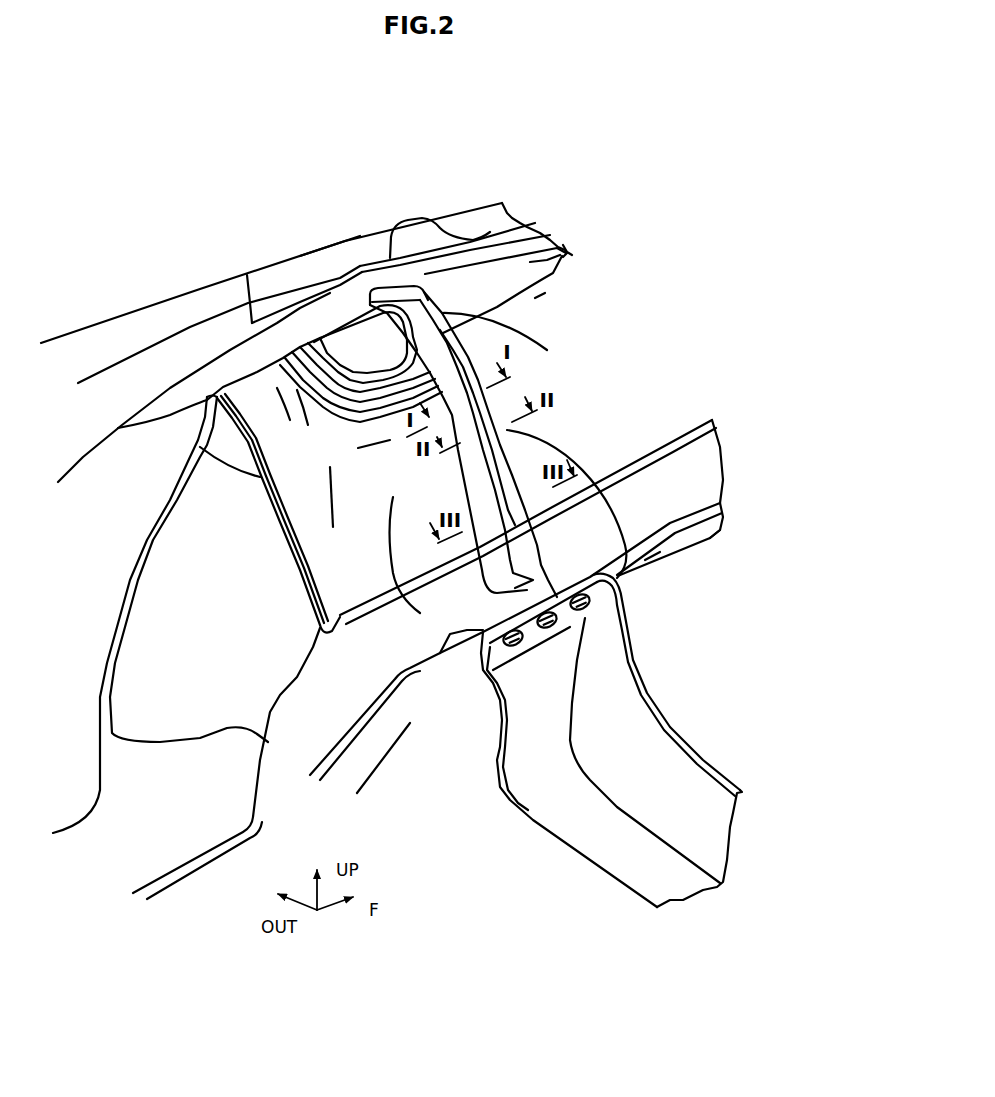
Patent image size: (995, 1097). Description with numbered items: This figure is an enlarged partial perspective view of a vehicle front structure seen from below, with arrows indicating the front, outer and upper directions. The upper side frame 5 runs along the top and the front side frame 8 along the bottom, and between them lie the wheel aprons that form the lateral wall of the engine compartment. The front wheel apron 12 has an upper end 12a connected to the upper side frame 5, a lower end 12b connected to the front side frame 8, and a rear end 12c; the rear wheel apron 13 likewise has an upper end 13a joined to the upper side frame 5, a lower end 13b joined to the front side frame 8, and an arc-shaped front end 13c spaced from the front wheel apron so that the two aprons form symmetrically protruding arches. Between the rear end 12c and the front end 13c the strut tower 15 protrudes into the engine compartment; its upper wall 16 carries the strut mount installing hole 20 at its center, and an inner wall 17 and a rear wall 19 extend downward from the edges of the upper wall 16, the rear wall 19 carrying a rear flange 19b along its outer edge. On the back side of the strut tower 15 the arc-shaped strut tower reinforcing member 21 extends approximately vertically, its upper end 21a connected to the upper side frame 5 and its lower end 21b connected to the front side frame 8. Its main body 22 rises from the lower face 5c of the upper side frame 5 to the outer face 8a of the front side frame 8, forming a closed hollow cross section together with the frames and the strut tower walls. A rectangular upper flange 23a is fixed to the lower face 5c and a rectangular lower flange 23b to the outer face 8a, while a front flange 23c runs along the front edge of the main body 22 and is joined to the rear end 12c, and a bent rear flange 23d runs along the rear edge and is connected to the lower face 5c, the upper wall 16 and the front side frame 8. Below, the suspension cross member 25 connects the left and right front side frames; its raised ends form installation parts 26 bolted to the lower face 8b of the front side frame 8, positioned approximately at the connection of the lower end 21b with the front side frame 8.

The upper side frame 5 is at (327, 243).
The lower face of the upper side frame 5c is at (437, 277).
The front side frame 8 is at (672, 525).
The outer face of the front side frame 8a is at (713, 537).
The lower face of the front side frame 8b is at (652, 562).
The front wheel apron 12 is at (540, 305).
The upper end of the front wheel apron 12a is at (570, 254).
The lower end of the front wheel apron 12b is at (688, 428).
The rear end of the front wheel apron 12c is at (640, 627).
The rear wheel apron 13 is at (113, 533).
The upper end of the rear wheel apron 13a is at (118, 427).
The lower end of the rear wheel apron 13b is at (275, 716).
The front end of the rear wheel apron 13c is at (203, 457).
The strut tower 15 is at (272, 320).
The upper wall 16 is at (283, 386).
The inner wall 17 is at (415, 597).
The rear wall 19 is at (265, 420).
The rear flange 19b is at (283, 543).
The strut mount installing hole 20 is at (340, 345).
The strut tower reinforcing member 21 is at (499, 402).
The upper end of the strut tower reinforcing member 21a is at (383, 297).
The lower end of the strut tower reinforcing member 21b is at (481, 653).
The main body 22 is at (540, 330).
The upper flange 23a is at (355, 348).
The lower flange 23b is at (550, 580).
The front flange 23c is at (545, 293).
The rear flange 23d is at (477, 583).
The suspension cross member 25 is at (602, 871).
The installation parts 26 is at (598, 605).